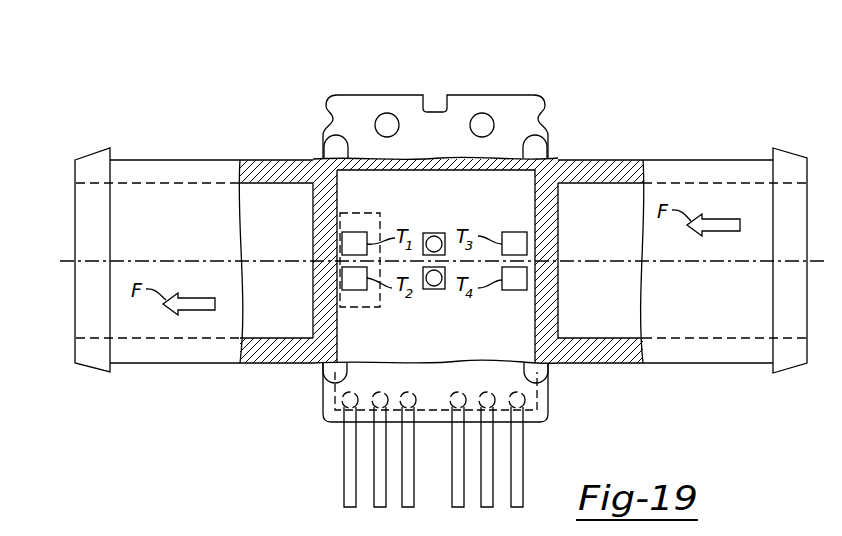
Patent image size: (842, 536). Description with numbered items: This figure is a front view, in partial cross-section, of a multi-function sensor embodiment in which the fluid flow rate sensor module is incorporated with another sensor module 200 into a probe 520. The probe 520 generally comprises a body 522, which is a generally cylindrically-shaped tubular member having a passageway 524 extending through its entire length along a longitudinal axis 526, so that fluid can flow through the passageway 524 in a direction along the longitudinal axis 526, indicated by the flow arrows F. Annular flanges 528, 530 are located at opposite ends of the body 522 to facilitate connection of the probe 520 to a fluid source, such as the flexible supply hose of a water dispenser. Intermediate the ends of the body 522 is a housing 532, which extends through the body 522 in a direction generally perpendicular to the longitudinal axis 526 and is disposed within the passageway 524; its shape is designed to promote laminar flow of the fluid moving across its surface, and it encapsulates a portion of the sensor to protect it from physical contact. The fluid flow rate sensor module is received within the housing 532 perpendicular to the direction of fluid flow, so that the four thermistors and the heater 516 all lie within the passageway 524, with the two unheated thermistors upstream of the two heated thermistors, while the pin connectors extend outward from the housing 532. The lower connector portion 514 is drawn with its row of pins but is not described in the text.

The sensor module 200 is at (434, 293).
The lower housing with connector pins 514 is at (323, 422).
The heater 516 is at (382, 214).
The probe 520 is at (325, 90).
The body 522 is at (175, 158).
The passageway 524 is at (278, 338).
The longitudinal axis 526 is at (68, 258).
The annular flange 528 is at (77, 158).
The annular flange 530 is at (795, 150).
The housing 532 is at (558, 160).